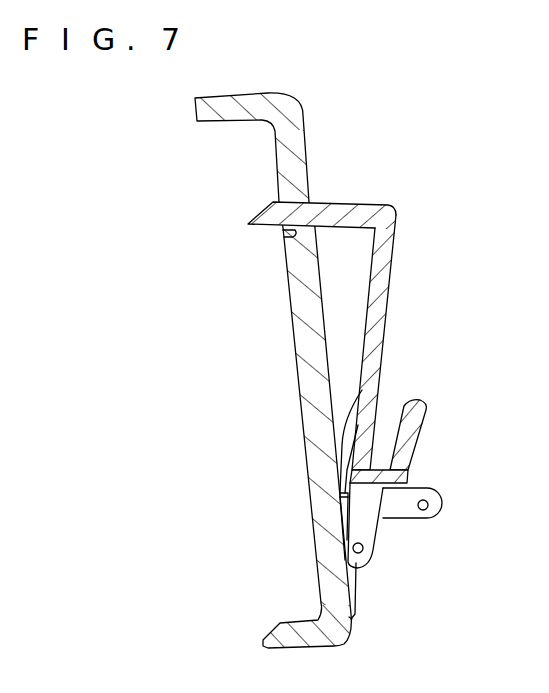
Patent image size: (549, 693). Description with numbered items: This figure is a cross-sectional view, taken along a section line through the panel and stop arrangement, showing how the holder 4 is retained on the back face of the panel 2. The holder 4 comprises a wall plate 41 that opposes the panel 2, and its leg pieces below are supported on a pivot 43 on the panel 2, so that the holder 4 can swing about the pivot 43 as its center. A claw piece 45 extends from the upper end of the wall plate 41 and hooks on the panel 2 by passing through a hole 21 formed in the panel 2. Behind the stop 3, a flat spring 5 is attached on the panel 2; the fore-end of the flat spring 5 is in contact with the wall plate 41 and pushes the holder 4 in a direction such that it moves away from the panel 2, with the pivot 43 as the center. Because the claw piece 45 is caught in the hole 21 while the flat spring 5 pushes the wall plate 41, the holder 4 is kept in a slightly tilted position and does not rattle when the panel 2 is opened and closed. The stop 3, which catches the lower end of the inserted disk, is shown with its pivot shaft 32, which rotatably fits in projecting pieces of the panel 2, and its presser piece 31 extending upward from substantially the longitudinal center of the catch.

The panel 2 is at (296, 329).
The hole 21 is at (283, 233).
The stop 3 is at (435, 484).
The presser piece 31 is at (407, 480).
The pivot shaft 32 is at (418, 512).
The holder 4 is at (354, 285).
The wall plate 41 is at (392, 262).
The pivot 43 is at (364, 548).
The claw piece 45 is at (337, 212).
The flat spring 5 is at (362, 390).